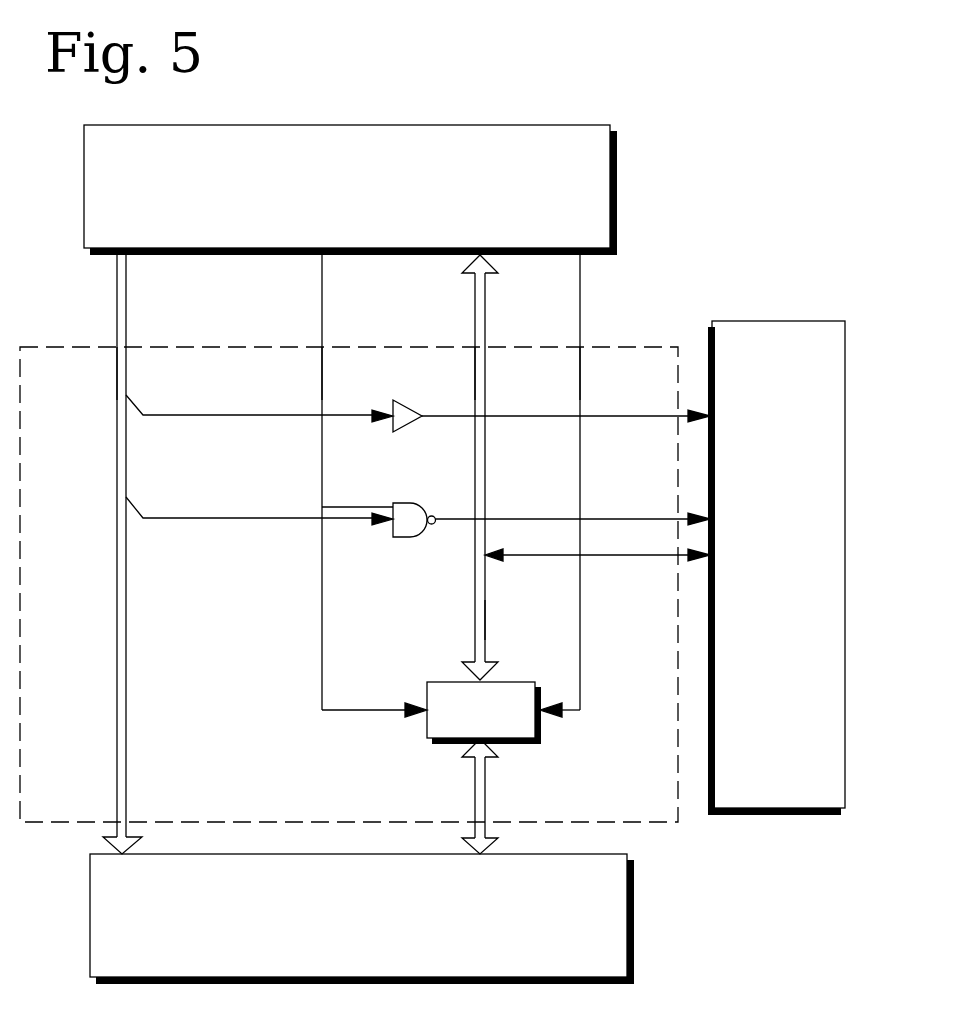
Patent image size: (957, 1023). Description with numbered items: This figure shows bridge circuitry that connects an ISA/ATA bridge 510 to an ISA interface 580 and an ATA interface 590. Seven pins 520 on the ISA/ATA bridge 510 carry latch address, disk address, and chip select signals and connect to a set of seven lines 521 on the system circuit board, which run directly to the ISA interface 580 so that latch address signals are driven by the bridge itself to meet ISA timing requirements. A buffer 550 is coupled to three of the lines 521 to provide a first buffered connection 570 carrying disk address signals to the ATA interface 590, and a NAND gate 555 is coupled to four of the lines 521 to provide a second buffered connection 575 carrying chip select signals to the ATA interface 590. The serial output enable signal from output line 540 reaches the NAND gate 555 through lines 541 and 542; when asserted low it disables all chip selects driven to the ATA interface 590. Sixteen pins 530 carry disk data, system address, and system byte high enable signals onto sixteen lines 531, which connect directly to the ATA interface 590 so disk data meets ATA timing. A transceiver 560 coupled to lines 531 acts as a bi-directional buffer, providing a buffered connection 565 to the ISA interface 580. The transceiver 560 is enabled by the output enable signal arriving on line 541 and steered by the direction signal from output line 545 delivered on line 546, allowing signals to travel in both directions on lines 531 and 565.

The ISA/ATA bridge 510 is at (606, 246).
The pins 520 is at (117, 302).
The lines 521 is at (117, 367).
The pins 530 is at (475, 297).
The lines 531 is at (475, 369).
The output line 540 is at (322, 297).
The line 541 is at (322, 367).
The line 542 is at (351, 507).
The output line 545 is at (580, 295).
The line 546 is at (580, 365).
The buffer 550 is at (393, 400).
The NAND gate 555 is at (430, 504).
The transceiver 560 is at (427, 690).
The buffered connection 565 is at (485, 624).
The first buffered connection 570 is at (623, 415).
The second buffered connection 575 is at (628, 502).
The ISA interface 580 is at (623, 976).
The ATA interface 590 is at (840, 802).